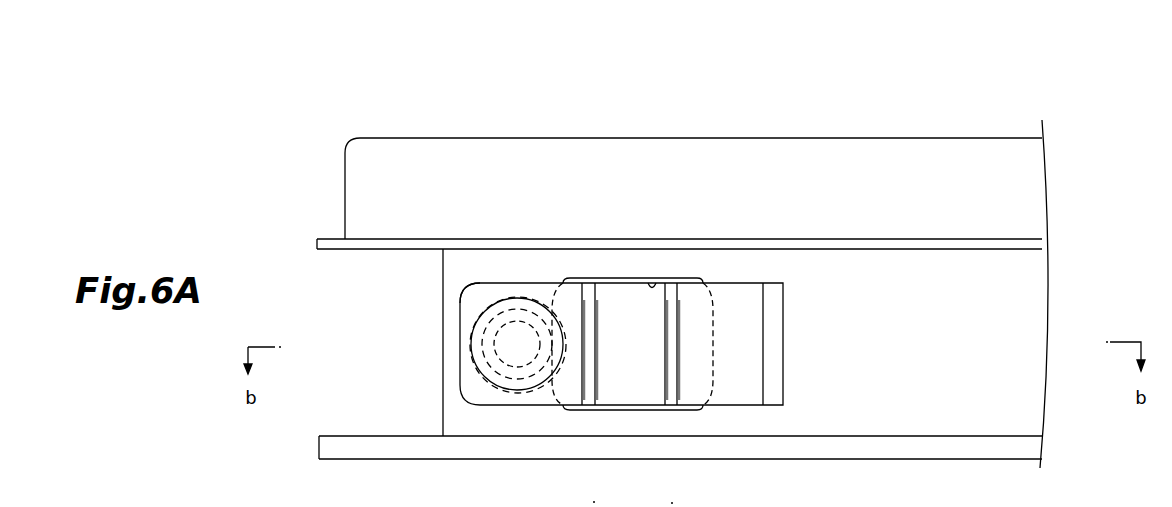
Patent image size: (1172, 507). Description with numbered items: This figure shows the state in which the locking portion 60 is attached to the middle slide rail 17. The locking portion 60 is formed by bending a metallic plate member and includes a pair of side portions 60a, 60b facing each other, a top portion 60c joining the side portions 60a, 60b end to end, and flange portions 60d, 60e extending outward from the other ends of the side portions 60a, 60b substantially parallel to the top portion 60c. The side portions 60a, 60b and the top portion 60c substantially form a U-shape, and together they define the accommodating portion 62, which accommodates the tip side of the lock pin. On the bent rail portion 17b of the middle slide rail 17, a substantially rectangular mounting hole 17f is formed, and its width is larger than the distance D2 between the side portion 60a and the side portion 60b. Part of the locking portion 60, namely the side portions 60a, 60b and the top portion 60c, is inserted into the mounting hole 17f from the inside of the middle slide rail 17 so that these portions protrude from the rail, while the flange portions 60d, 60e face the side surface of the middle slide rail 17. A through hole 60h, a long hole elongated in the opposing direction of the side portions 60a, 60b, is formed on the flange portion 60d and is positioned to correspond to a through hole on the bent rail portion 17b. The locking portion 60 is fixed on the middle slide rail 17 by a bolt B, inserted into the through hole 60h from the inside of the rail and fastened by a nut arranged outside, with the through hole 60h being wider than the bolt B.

The middle slide rail 17 is at (915, 138).
The bent rail portion 17b is at (556, 162).
The mounting hole 17f is at (653, 288).
The locking portion 60 is at (748, 412).
The side portion 60a is at (590, 312).
The side portion 60b is at (660, 332).
The top portion 60c is at (632, 310).
The flange portion 60d is at (470, 300).
The flange portion 60e is at (745, 360).
The through hole 60h is at (475, 347).
The accommodating portion 62 is at (620, 380).
The bolt B is at (517, 378).
The distance between the side portions D2 is at (633, 496).